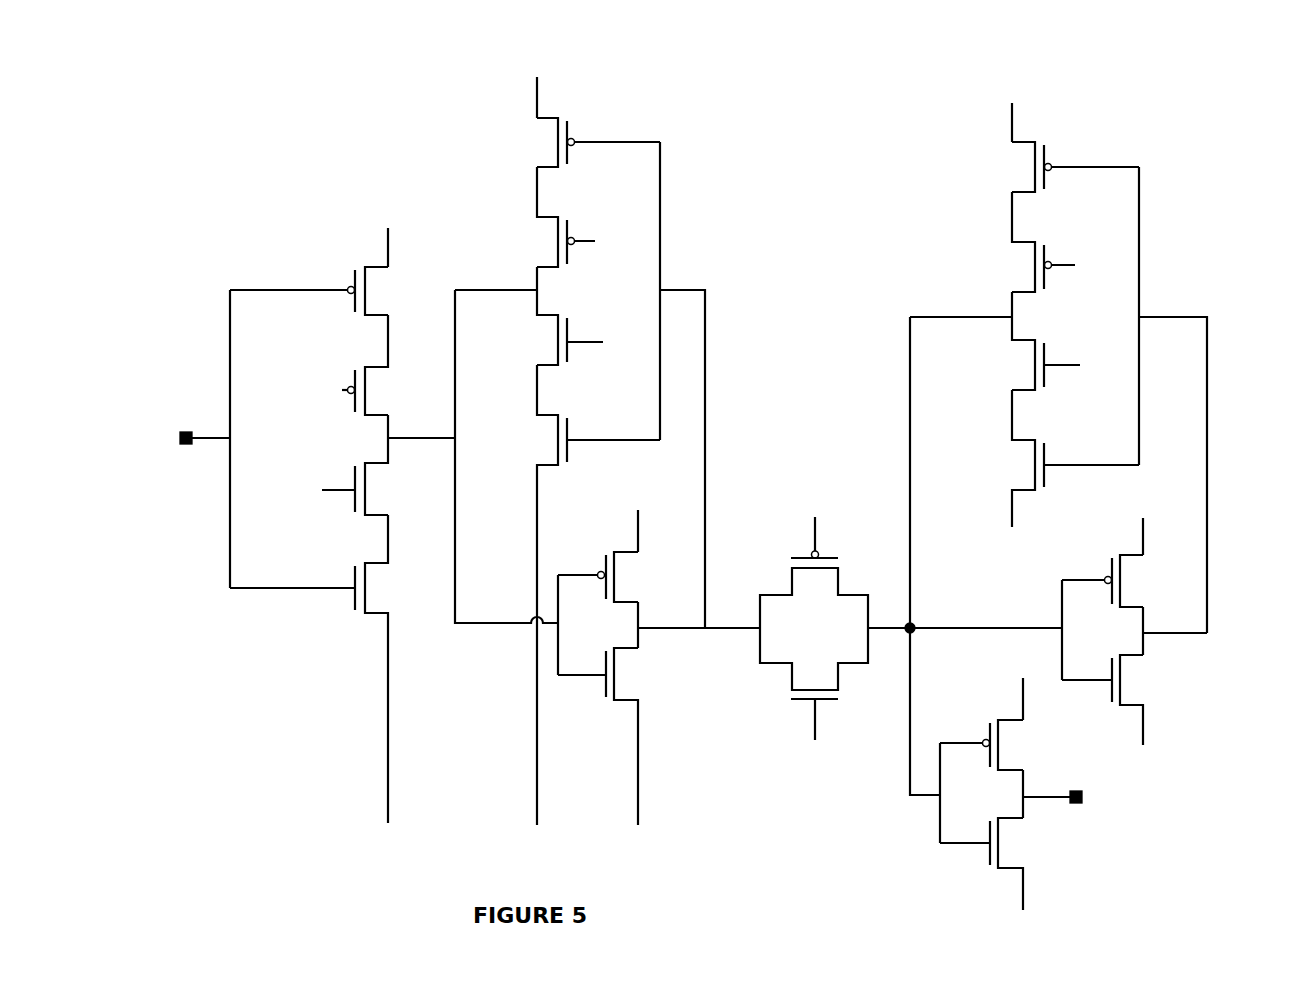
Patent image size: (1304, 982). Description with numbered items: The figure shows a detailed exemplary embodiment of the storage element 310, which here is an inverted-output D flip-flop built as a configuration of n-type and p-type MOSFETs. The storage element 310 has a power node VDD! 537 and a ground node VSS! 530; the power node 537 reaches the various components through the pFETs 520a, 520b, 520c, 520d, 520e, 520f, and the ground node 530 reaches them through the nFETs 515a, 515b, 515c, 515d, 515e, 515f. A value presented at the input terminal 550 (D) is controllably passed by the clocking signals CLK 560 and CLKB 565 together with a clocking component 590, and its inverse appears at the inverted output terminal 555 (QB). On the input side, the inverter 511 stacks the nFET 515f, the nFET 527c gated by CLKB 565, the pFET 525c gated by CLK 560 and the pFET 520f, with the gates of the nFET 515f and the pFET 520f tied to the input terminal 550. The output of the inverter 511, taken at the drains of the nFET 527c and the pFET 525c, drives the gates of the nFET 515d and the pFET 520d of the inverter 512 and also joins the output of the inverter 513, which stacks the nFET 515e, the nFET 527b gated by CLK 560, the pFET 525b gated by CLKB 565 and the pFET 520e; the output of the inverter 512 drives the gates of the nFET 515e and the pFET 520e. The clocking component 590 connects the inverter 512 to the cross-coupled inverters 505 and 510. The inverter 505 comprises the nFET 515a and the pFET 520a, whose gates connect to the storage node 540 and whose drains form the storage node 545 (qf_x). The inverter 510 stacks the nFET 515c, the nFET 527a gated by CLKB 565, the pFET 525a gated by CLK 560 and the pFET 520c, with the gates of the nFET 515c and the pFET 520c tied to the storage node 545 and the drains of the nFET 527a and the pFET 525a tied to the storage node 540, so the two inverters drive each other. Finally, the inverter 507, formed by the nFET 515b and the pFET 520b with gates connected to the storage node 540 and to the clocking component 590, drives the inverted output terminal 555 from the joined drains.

The storage element 310 is at (190, 735).
The inverter 505 is at (1170, 662).
The inverter 507 is at (968, 867).
The inverter 510 is at (888, 262).
The inverter 511 is at (300, 257).
The inverter 512 is at (658, 655).
The inverter 513 is at (683, 175).
The nFET 515a is at (1130, 683).
The nFET 515b is at (1015, 830).
The nFET 515c is at (1018, 472).
The nFET 515d is at (627, 703).
The nFET 515e is at (548, 440).
The nFET 515f is at (377, 593).
The pFET 520a is at (1132, 572).
The pFET 520b is at (1000, 716).
The pFET 520c is at (1018, 177).
The pFET 520d is at (625, 580).
The pFET 520e is at (543, 140).
The pFET 520f is at (378, 292).
The pFET 525a is at (1018, 275).
The pFET 525b is at (548, 242).
The pFET 525c is at (380, 390).
The nFET 527a is at (1018, 357).
The nFET 527b is at (548, 337).
The nFET 527c is at (378, 487).
The ground node 530 is at (360, 795).
The power node 537 is at (358, 220).
The storage node 540 is at (957, 627).
The storage node 545 is at (1207, 613).
The input terminal 550 is at (182, 430).
The inverted output terminal 555 is at (1080, 805).
The clocking signal CLK 560 is at (325, 370).
The clocking signal CLKB 565 is at (324, 465).
The clocking component 590 is at (767, 572).